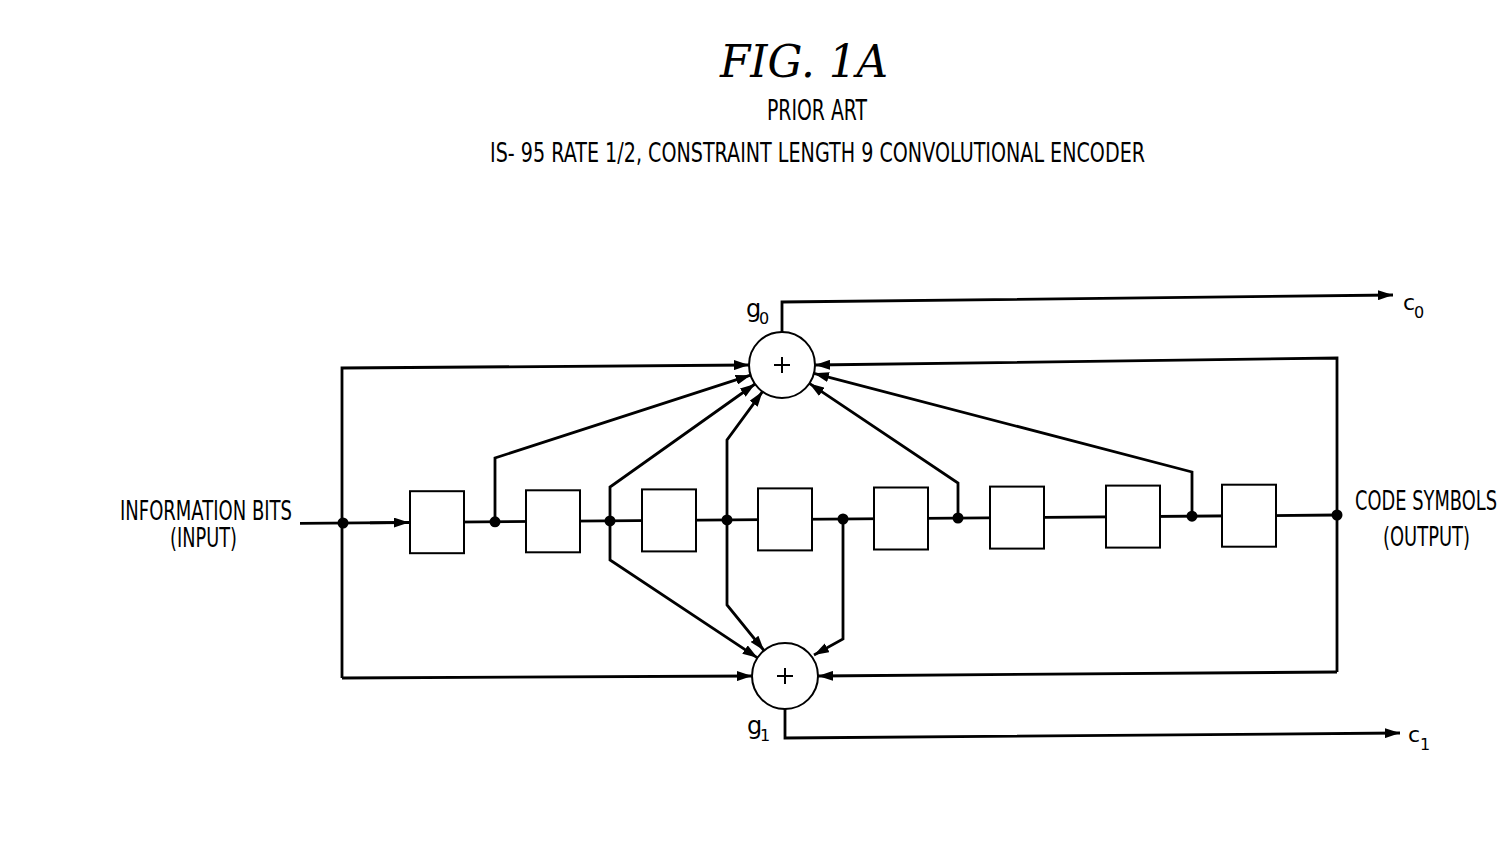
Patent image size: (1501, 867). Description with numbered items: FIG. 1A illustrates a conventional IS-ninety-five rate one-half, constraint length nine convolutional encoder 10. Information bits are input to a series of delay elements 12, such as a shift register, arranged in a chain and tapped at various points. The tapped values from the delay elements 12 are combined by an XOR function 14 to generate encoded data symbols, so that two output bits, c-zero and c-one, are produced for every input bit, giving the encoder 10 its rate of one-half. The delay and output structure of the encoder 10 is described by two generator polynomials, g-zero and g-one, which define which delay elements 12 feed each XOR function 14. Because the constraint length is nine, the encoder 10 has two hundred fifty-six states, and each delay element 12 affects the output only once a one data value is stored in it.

The convolutional encoder 10 is at (455, 290).
The delay element 12 is at (1248, 484).
The XOR function 14 is at (757, 292).